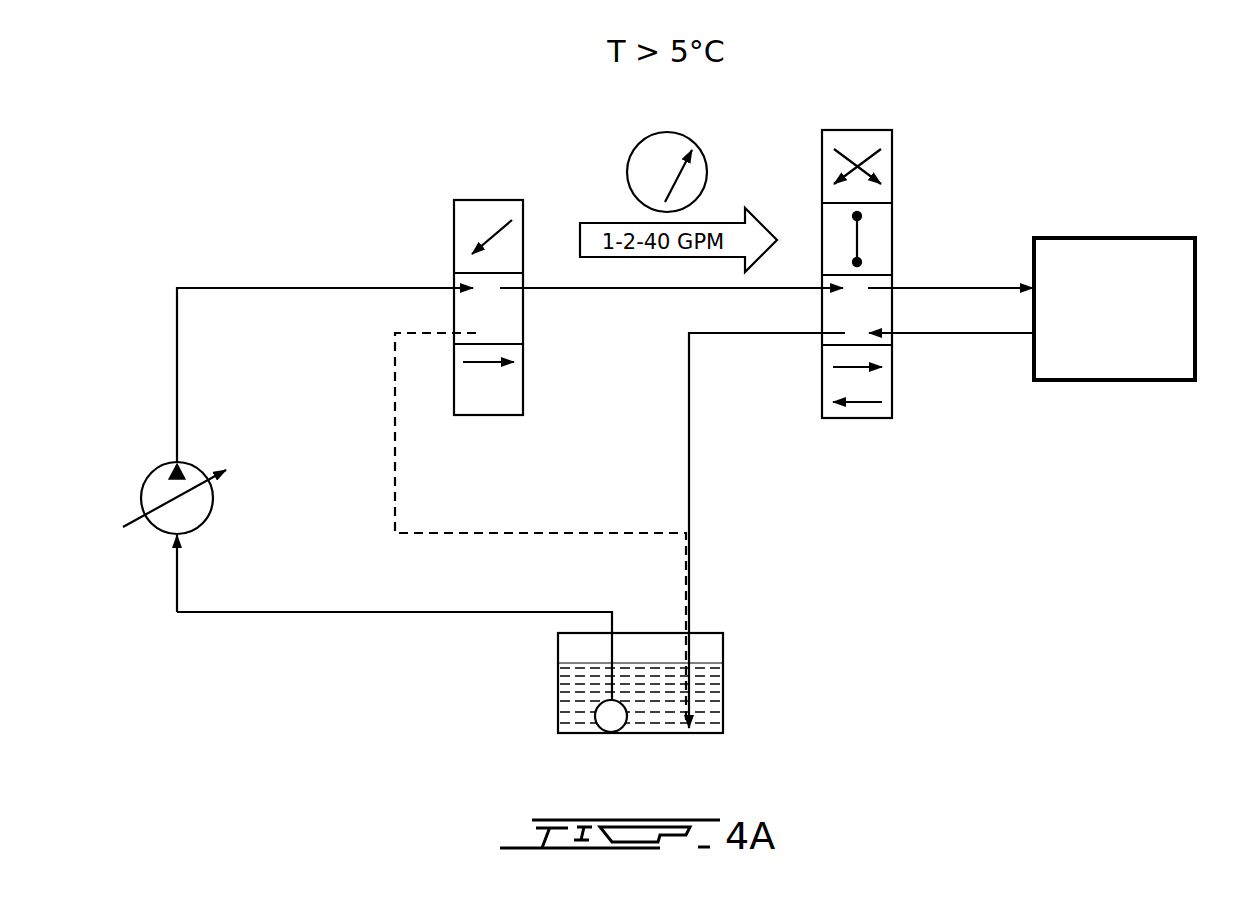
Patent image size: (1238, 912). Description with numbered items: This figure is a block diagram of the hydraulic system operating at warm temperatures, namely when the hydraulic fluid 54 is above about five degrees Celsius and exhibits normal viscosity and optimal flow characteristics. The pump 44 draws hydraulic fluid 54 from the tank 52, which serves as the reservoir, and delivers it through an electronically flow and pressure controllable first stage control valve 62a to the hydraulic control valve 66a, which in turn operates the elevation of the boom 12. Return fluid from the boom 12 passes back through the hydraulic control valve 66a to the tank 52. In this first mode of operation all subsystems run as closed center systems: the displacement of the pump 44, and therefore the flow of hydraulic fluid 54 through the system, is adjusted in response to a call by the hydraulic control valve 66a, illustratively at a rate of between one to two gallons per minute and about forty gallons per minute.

The boom 12 is at (1117, 238).
The pump 44 is at (150, 475).
The tank 52 is at (558, 643).
The hydraulic fluid 54 is at (580, 687).
The first stage control valve 62a is at (488, 200).
The hydraulic control valve 66a is at (858, 130).